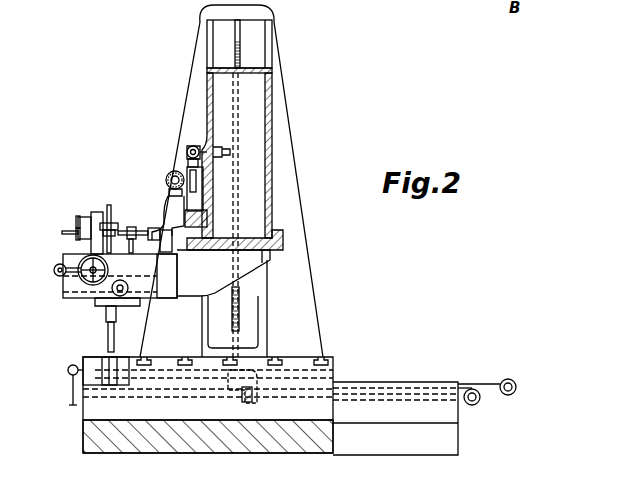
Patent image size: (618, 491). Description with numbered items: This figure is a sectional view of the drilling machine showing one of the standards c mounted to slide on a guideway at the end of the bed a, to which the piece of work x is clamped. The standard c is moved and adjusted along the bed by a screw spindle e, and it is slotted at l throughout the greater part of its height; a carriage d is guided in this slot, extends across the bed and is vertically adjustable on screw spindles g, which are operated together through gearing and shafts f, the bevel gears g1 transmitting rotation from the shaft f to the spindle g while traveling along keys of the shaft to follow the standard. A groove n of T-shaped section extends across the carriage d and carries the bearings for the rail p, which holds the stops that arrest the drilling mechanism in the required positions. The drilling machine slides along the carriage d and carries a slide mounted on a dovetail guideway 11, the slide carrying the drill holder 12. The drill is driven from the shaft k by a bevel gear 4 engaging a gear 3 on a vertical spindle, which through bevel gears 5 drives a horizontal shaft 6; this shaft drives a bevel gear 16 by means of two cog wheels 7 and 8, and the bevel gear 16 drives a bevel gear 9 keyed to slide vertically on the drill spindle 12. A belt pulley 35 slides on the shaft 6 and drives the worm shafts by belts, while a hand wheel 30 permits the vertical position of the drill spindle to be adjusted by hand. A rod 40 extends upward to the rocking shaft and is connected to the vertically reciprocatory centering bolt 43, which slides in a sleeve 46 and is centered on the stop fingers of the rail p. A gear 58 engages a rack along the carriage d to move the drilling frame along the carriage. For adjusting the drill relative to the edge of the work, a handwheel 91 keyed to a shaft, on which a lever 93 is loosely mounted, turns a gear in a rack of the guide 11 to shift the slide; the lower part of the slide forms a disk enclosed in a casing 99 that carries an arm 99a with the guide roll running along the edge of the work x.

The standard c is at (290, 176).
The slot l is at (258, 32).
The carriage d is at (272, 84).
The column flange h is at (279, 236).
The rail p is at (190, 148).
The groove n is at (222, 156).
The centering bolt 43 is at (209, 189).
The sleeve 46 is at (197, 204).
The shaft k is at (166, 181).
The bevel gear 4 is at (172, 174).
The gear 3 is at (168, 194).
The bevel gears 5 is at (162, 240).
The bevel gear 16 is at (96, 212).
The cog wheel 7 is at (76, 217).
The horizontal shaft 6 is at (62, 233).
The cog wheel 8 is at (77, 240).
The drill holder 12 is at (110, 218).
The bevel gear 9 is at (112, 219).
The belt pulley 35 is at (131, 227).
The dovetail guideway 11 is at (168, 262).
The lever 93 is at (80, 264).
The handwheel 91 is at (82, 280).
The rod 40 is at (127, 287).
The arm 99a is at (100, 306).
The hand wheel 30 is at (118, 300).
The casing 99 is at (148, 290).
The gear 58 is at (232, 250).
The screw spindle g is at (233, 317).
The bed a is at (333, 372).
The shaft f is at (398, 400).
The screw spindle e is at (486, 384).
The piece of work x is at (105, 356).
The bevel gears g1 is at (244, 395).